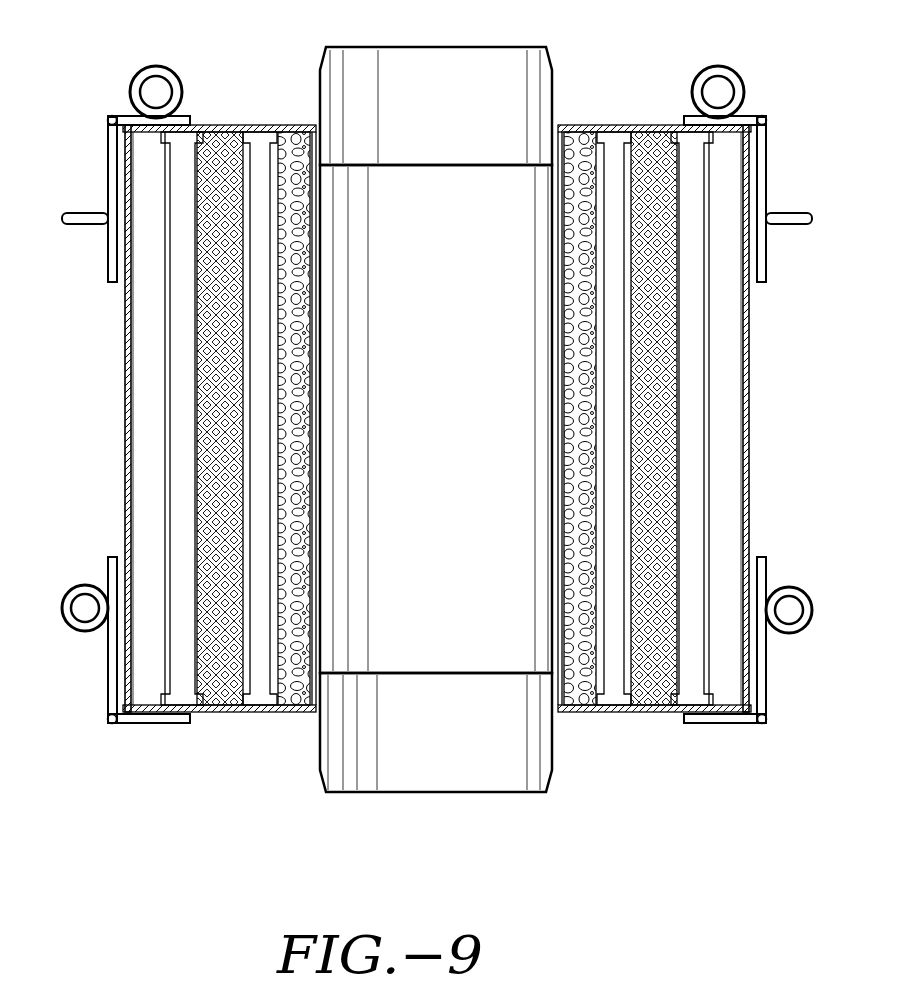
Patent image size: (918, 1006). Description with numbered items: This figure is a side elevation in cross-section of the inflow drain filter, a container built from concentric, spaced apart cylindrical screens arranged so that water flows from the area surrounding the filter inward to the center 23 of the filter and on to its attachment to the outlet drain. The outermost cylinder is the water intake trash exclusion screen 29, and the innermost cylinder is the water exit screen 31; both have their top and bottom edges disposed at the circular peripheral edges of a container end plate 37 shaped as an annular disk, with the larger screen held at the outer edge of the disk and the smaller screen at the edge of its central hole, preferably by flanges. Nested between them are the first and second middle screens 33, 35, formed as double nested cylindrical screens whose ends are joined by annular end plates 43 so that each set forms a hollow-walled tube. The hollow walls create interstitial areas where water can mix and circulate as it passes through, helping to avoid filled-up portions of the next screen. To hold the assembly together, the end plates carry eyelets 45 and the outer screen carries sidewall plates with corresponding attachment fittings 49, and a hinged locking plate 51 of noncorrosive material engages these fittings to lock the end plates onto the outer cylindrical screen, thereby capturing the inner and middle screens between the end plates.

The center of the filter 23 is at (462, 131).
The water intake trash exclusion screen 29 is at (123, 352).
The water exit screen 31 is at (552, 415).
The first middle screen 33 is at (186, 426).
The second middle screen 35 is at (260, 498).
The container end plate 37 is at (642, 125).
The annular end plate 43 is at (262, 125).
The eyelet 45 is at (735, 78).
The attachment fitting 49 is at (812, 221).
The hinged locking plate 51 is at (767, 168).